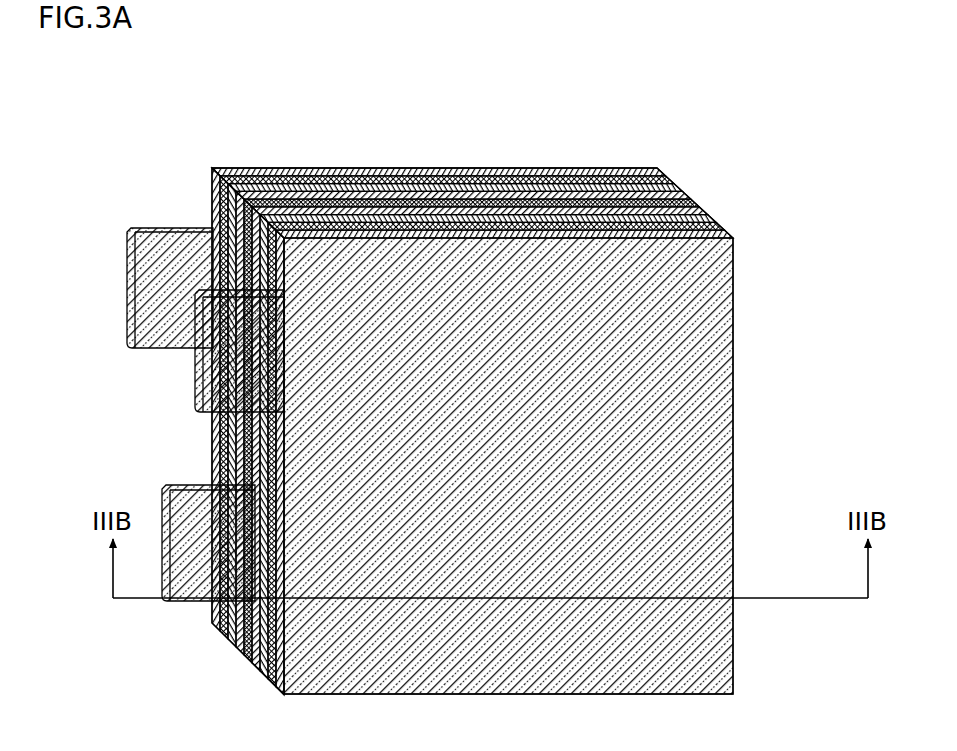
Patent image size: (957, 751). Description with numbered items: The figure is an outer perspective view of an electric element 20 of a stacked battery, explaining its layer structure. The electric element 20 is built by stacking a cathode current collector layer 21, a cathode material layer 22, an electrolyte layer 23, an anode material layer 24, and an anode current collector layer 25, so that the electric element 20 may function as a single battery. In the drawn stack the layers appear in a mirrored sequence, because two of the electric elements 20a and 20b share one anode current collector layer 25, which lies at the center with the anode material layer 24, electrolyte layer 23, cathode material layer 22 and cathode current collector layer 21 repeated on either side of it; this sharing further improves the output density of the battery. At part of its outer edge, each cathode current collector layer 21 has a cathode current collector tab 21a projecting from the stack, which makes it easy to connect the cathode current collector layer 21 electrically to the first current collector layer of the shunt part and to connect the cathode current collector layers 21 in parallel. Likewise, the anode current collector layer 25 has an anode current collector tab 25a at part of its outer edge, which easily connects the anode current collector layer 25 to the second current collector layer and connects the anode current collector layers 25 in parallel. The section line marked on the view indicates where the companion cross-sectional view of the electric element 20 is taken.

The electric element 20 is at (544, 102).
The electric element 20a is at (508, 466).
The electric element 20b is at (508, 466).
The cathode current collector layer 21 is at (661, 172).
The cathode current collector tab 21a is at (127, 228).
The cathode material layer 22 is at (670, 180).
The electrolyte layer 23 is at (678, 187).
The anode material layer 24 is at (686, 195).
The anode current collector layer 25 is at (695, 203).
The anode current collector tab 25a is at (164, 606).